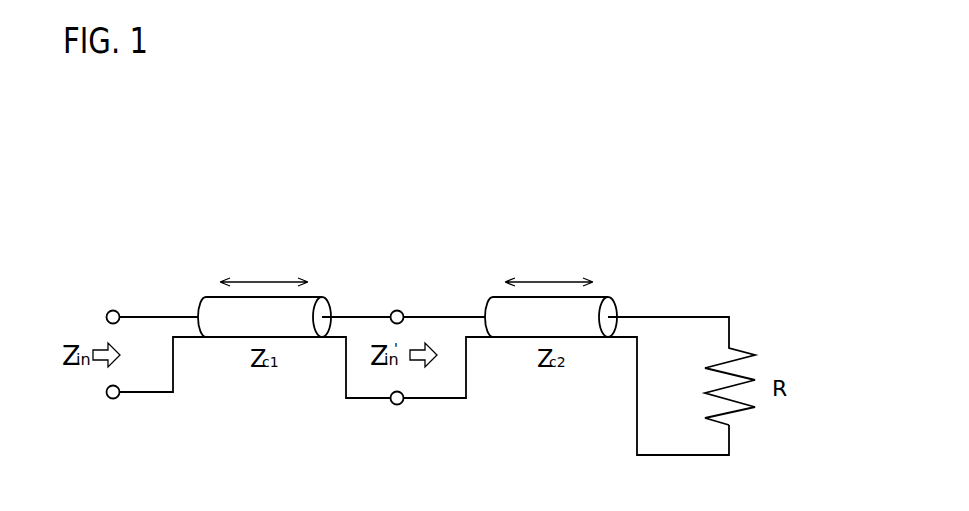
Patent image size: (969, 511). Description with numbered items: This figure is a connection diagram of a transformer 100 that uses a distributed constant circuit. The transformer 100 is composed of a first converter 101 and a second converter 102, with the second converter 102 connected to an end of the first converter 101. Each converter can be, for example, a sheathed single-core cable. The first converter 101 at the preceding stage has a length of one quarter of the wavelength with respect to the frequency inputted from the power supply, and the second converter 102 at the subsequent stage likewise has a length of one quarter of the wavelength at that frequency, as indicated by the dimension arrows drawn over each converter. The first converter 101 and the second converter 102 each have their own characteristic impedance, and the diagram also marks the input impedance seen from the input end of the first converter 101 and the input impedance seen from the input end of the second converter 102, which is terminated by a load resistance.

The transformer 100 is at (667, 196).
The first converter 101 is at (316, 296).
The second converter 102 is at (604, 296).